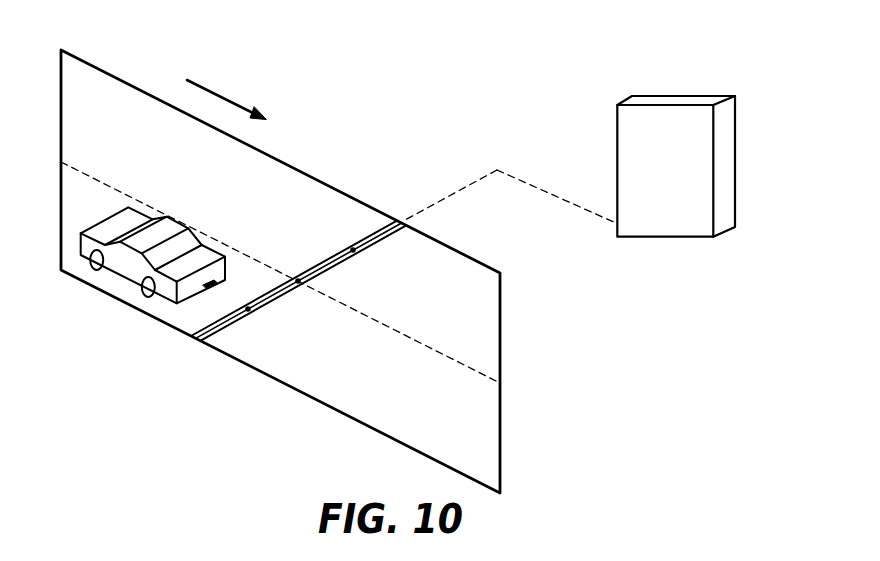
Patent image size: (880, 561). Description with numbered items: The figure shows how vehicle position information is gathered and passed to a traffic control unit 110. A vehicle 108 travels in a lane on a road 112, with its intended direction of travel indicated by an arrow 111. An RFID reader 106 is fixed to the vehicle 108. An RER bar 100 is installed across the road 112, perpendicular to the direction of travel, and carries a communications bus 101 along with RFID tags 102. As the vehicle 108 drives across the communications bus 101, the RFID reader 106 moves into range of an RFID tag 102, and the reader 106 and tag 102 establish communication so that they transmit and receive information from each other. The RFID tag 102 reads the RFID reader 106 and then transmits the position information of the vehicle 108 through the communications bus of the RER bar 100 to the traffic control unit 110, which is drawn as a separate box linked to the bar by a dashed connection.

The RER bar 100 is at (197, 338).
The communications bus 101 is at (388, 220).
The RFID tag 102 is at (353, 250).
The RFID reader 106 is at (218, 255).
The vehicle 108 is at (127, 270).
The traffic control unit 110 is at (658, 123).
The arrow 111 is at (225, 100).
The road 112 is at (432, 406).